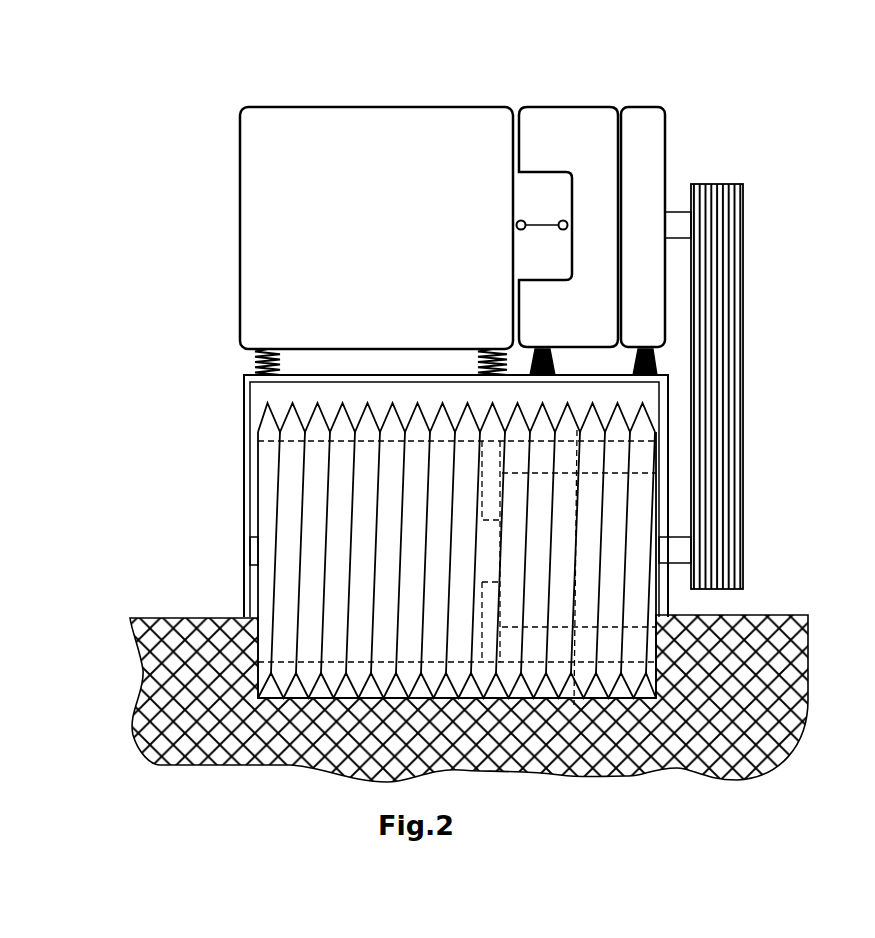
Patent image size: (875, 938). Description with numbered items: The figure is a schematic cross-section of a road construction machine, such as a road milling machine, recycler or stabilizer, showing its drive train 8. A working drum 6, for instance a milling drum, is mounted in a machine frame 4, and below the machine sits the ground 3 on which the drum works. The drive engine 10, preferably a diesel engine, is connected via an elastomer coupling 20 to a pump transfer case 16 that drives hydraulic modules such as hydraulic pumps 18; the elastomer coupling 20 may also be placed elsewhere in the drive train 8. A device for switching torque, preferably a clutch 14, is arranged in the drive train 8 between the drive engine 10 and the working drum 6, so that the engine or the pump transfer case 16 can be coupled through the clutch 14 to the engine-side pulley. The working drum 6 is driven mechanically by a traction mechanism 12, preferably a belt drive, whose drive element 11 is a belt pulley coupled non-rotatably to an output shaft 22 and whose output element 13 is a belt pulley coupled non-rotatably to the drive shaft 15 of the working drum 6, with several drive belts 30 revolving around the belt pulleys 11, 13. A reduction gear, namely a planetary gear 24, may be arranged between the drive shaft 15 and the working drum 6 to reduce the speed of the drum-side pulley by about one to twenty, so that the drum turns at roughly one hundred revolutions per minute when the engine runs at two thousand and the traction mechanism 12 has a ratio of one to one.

The ground surface 3 is at (783, 616).
The machine frame 4 is at (247, 420).
The working drum 6 is at (268, 462).
The drive train 8 is at (690, 130).
The drive engine 10 is at (350, 239).
The drive element 11 is at (752, 213).
The traction mechanism 12 is at (758, 418).
The output element 13 is at (764, 530).
The clutch 14 is at (654, 228).
The drive shaft 15 is at (677, 548).
The pump transfer case 16 is at (609, 228).
The hydraulic pumps 18 is at (541, 135).
The elastomer coupling 20 is at (543, 227).
The output shaft 22 is at (677, 222).
The planetary gear 24 is at (612, 742).
The drive belts 30 is at (722, 315).